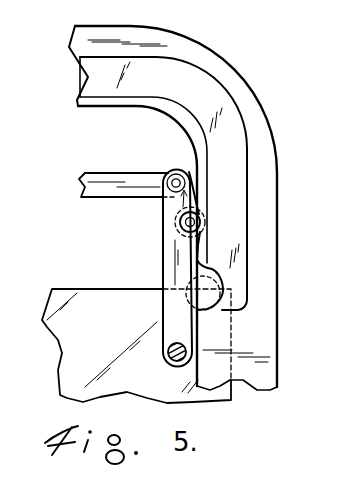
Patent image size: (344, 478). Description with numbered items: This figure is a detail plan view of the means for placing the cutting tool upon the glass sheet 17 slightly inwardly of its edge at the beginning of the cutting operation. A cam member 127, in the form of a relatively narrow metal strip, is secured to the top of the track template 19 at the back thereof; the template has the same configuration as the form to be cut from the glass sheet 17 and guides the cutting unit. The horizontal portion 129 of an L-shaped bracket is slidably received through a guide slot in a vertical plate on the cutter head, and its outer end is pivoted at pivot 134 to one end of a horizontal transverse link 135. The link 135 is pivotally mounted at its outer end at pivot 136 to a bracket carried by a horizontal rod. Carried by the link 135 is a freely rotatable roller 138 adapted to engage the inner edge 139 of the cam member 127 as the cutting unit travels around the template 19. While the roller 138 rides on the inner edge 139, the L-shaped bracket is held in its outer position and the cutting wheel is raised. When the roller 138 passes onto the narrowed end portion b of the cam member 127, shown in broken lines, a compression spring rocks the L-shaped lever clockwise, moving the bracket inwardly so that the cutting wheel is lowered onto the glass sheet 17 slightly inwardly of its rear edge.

The cam member 127 is at (207, 98).
The track template 19 is at (125, 106).
The glass sheet 17 is at (66, 343).
The horizontal portion of L-shaped bracket 129 is at (104, 190).
The horizontal transverse link 135 is at (170, 263).
The pivot 134 is at (185, 172).
The inner edge of cam member 139 is at (268, 171).
The roller 138 is at (204, 228).
The pivot 136 is at (163, 357).
The narrowed end portion of cam member b is at (225, 283).